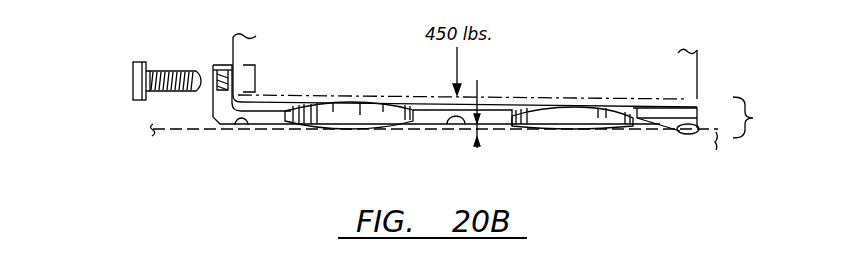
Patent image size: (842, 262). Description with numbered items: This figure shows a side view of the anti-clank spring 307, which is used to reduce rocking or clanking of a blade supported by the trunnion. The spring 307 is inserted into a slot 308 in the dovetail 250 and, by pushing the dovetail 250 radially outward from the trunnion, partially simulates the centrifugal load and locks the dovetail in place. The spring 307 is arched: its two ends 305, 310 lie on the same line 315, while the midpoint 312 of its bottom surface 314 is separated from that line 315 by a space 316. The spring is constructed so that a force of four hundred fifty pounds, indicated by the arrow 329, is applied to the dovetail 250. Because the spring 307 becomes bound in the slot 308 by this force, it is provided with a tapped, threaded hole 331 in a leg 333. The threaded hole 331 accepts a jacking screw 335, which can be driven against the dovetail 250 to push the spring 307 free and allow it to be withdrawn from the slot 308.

The dovetail 250 is at (643, 71).
The end 305 is at (245, 127).
The anti-clank spring 307 is at (577, 128).
The slot 308 is at (765, 117).
The end 310 is at (690, 126).
The midpoint 312 is at (448, 124).
The bottom surface 314 is at (488, 128).
The line 315 is at (171, 130).
The space 316 is at (477, 140).
The arrow 329 is at (457, 58).
The threaded hole 331 is at (256, 79).
The leg 333 is at (223, 63).
The jacking screw 335 is at (152, 72).